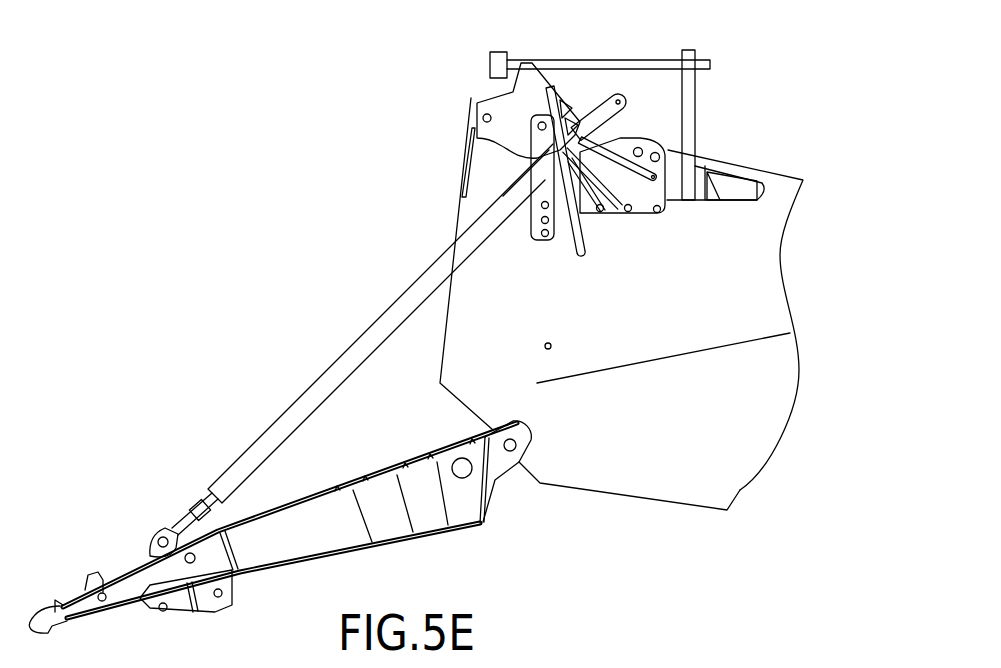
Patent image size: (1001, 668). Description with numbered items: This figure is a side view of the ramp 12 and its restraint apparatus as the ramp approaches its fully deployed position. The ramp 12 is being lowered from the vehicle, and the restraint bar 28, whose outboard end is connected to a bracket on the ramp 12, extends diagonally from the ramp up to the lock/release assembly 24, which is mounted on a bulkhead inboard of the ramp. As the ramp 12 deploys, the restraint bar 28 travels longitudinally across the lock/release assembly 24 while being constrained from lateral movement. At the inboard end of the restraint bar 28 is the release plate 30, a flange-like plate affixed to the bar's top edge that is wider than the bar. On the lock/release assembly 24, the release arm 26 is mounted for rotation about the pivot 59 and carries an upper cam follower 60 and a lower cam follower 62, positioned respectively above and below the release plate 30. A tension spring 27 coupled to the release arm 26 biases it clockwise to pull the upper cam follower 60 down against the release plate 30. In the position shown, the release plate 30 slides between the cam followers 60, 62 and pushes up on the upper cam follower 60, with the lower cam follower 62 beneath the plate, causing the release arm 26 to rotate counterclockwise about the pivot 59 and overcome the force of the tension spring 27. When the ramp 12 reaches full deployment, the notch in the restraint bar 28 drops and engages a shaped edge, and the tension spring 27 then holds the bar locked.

The ramp 12 is at (320, 483).
The lock/release assembly 24 is at (623, 237).
The release arm 26 is at (583, 247).
The tension spring 27 is at (640, 137).
The restraint bar 28 is at (330, 376).
The release plate 30 is at (597, 87).
The pivot 59 is at (477, 137).
The upper cam follower 60 is at (553, 87).
The lower cam follower 62 is at (550, 126).